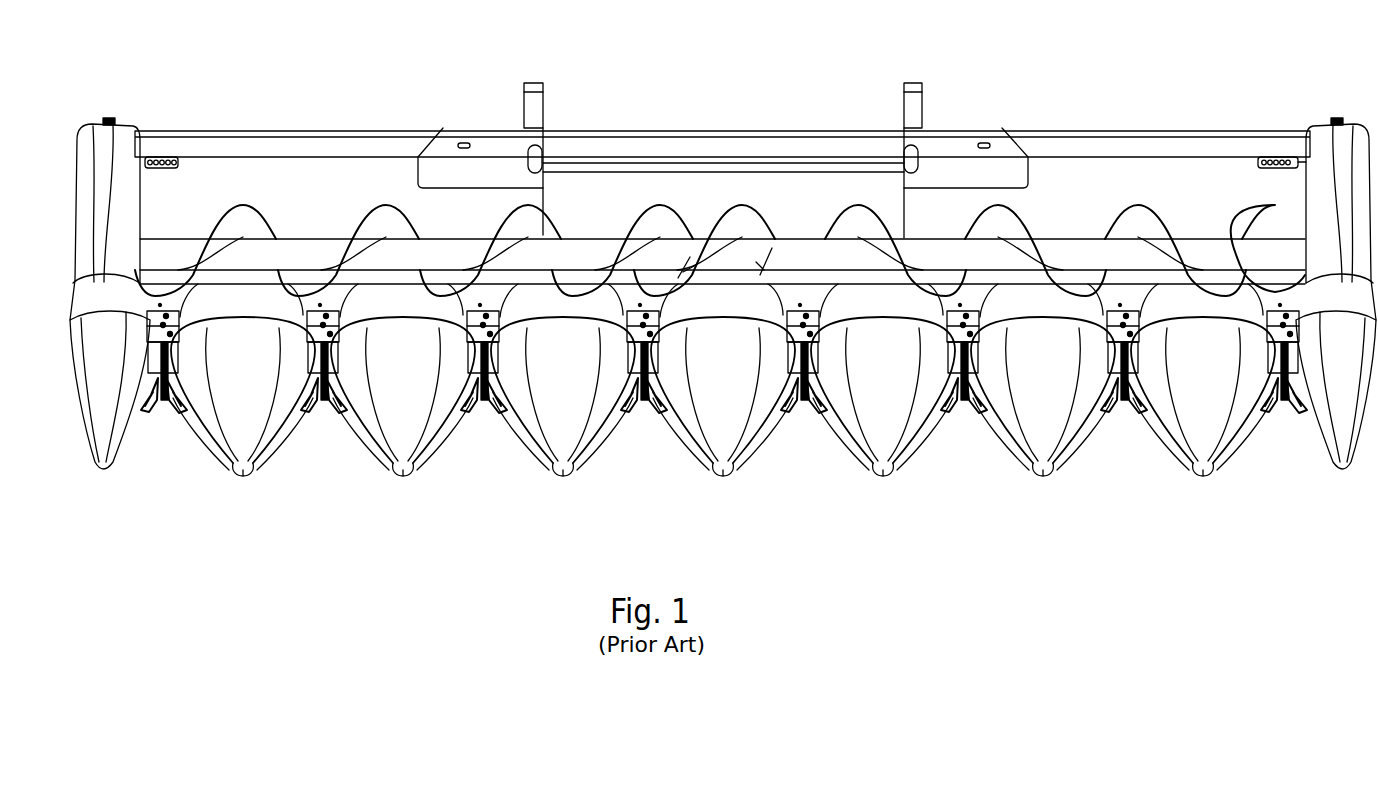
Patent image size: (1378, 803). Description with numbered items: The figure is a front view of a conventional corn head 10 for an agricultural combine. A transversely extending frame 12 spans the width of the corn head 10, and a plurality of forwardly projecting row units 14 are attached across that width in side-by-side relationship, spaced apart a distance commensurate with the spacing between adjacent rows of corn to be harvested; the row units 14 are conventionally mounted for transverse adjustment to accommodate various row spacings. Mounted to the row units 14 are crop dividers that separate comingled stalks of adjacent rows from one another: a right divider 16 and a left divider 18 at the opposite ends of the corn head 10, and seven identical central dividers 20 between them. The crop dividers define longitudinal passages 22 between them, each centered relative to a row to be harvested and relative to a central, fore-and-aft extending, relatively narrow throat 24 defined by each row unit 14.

The corn head 10 is at (334, 590).
The frame 12 is at (223, 111).
The row units 14 is at (148, 440).
The right divider 16 is at (85, 422).
The left divider 18 is at (1352, 392).
The central dividers 20 is at (256, 401).
The longitudinal passages 22 is at (168, 431).
The throat 24 is at (315, 365).